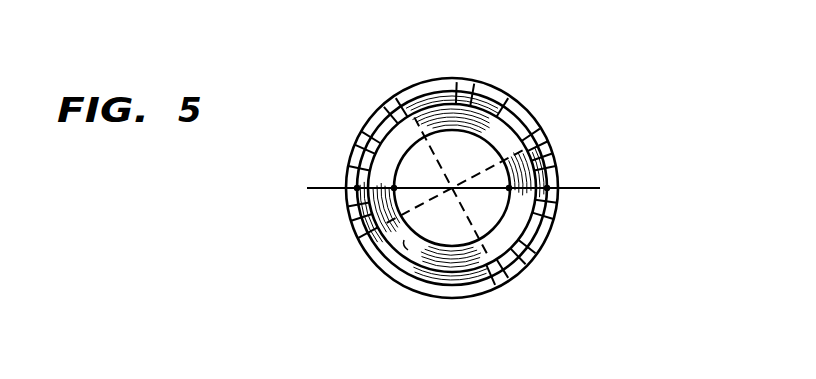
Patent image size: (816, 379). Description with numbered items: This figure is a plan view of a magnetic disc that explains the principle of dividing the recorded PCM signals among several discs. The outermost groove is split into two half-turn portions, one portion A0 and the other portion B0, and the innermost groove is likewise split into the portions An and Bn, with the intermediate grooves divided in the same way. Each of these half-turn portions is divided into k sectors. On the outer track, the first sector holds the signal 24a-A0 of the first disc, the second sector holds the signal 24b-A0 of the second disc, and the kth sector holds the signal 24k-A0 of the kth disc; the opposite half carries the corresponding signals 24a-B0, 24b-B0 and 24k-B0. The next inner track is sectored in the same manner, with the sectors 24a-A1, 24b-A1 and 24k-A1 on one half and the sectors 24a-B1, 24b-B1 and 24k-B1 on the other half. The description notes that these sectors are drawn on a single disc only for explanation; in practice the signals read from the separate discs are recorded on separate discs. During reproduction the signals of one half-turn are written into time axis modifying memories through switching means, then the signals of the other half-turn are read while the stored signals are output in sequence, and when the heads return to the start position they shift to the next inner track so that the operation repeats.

The signal sector of the second disc 24b-A1 is at (380, 103).
The signal sector of the second disc 24b-A0 is at (412, 66).
The 180° track portion An is at (462, 78).
The 180° track portion A0 is at (502, 105).
The signal sector of the kth disc 24k-A1 is at (542, 135).
The signal sector of the kth disc 24k-A0 is at (553, 152).
The signal sector of the first disc 24a-B1 is at (557, 200).
The signal sector of the first disc 24a-B0 is at (560, 220).
The 180° track portion B0 is at (536, 252).
The signal sector of the second disc 24b-B0 is at (533, 258).
The signal sector of the second disc 24b-B1 is at (500, 270).
The 180° track portion Bn is at (408, 250).
The signal sector of the first disc 24a-A0 is at (358, 132).
The signal sector of the first disc 24a-A1 is at (350, 166).
The signal sector of the kth disc 24k-B1 is at (347, 212).
The signal sector of the kth disc 24k-B0 is at (355, 238).